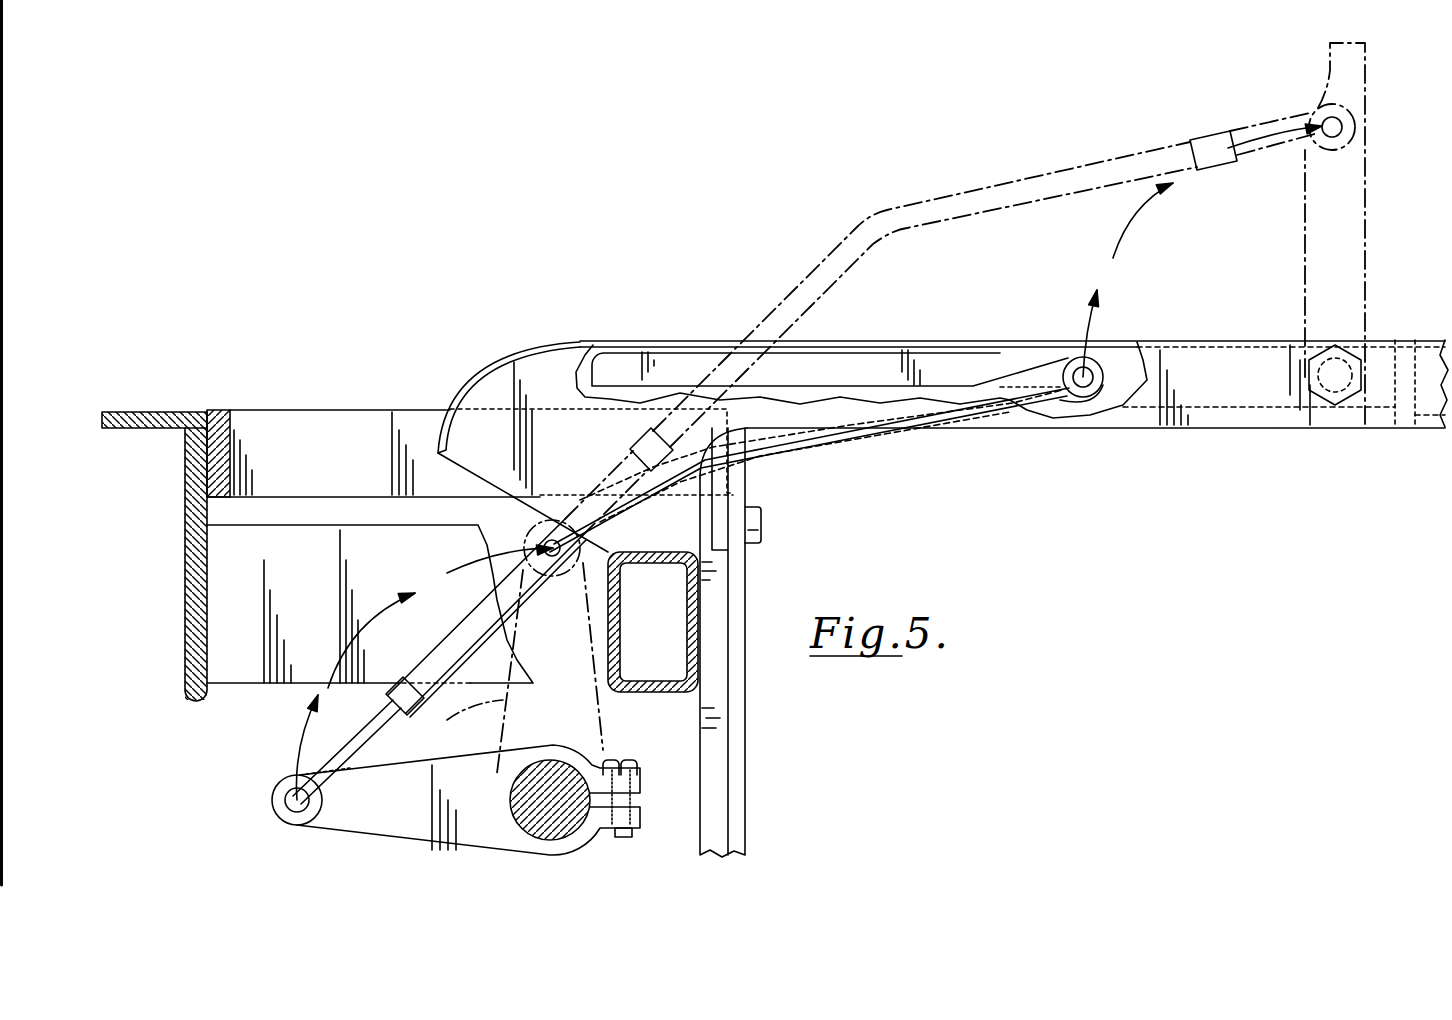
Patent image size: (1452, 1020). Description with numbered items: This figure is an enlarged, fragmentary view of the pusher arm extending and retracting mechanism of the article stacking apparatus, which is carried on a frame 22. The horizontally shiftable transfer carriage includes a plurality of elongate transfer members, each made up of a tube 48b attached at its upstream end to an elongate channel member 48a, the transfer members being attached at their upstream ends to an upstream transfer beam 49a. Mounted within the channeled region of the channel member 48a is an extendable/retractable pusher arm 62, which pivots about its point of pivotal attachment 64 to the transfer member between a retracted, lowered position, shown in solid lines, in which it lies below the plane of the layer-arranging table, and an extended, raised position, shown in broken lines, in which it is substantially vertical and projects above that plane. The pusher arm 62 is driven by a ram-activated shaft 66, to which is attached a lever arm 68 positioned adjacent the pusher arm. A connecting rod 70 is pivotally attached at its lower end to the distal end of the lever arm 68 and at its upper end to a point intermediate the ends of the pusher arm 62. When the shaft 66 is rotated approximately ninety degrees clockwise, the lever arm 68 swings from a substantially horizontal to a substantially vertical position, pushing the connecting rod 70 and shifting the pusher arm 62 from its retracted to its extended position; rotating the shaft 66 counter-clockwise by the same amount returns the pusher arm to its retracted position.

The frame 22 is at (190, 578).
The channel member 48a is at (1232, 330).
The tube 48b is at (1428, 345).
The upstream transfer beam 49a is at (623, 693).
The pusher arm 62 is at (952, 342).
The point of pivotal attachment 64 is at (1307, 382).
The ram-activated shaft 66 is at (520, 774).
The lever arm 68 is at (447, 720).
The connecting rod 70 is at (917, 203).